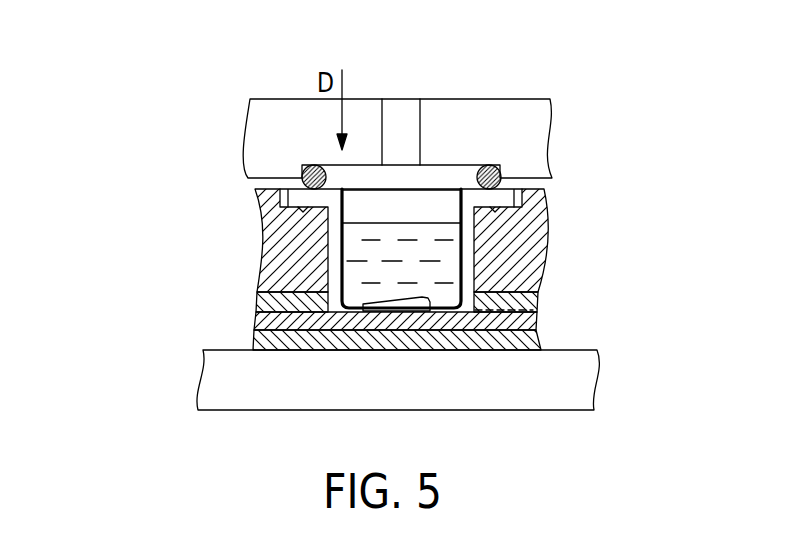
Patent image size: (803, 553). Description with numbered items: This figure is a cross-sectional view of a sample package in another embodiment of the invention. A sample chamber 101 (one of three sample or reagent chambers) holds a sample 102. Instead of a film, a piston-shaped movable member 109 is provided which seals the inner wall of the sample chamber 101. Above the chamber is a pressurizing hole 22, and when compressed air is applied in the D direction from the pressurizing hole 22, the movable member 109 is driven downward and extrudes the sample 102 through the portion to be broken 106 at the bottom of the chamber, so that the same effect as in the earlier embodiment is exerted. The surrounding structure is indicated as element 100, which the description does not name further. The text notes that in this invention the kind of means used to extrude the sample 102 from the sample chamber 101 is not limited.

The pressurizing hole 22 is at (405, 128).
The cap 100 is at (435, 189).
The movable member 109 is at (353, 205).
The sample 102 is at (390, 242).
The sample chamber 101 is at (322, 247).
The portion to be broken 106 is at (433, 305).